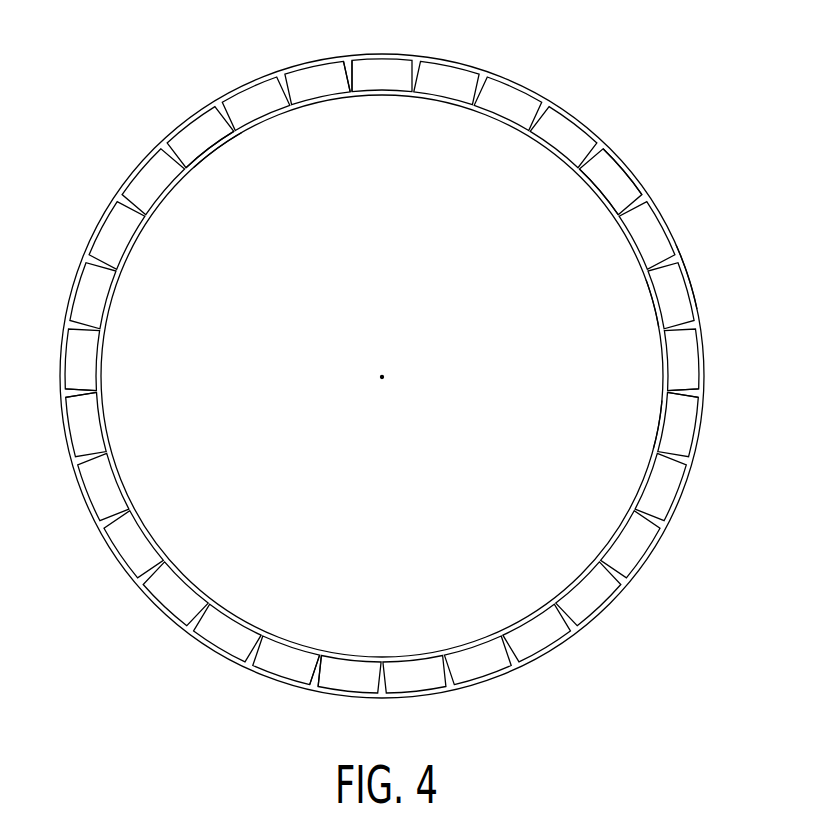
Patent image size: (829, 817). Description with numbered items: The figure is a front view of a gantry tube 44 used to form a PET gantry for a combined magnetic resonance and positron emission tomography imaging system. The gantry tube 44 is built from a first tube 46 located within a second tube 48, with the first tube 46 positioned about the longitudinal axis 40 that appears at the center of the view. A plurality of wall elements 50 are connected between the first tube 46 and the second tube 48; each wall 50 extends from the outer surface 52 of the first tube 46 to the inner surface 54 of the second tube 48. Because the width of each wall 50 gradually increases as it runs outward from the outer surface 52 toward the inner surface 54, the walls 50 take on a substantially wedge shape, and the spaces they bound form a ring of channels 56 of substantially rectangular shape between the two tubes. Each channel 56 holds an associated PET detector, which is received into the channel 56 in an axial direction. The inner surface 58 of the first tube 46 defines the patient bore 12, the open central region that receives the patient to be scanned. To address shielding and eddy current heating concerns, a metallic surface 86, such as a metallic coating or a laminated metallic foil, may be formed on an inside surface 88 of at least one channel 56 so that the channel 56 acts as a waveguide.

The patient bore 12 is at (389, 373).
The longitudinal axis 40 is at (382, 377).
The gantry tube 44 is at (582, 122).
The first tube 46 is at (655, 302).
The second tube 48 is at (692, 277).
The wall elements 50 is at (342, 78).
The outer surface of the first tube 52 is at (612, 197).
The inner surface of the second tube 54 is at (627, 178).
The channels 56 is at (451, 75).
The inner surface of the first tube 58 is at (662, 425).
The metallic surface 86 is at (210, 143).
The inside surface of the channel 88 is at (230, 133).